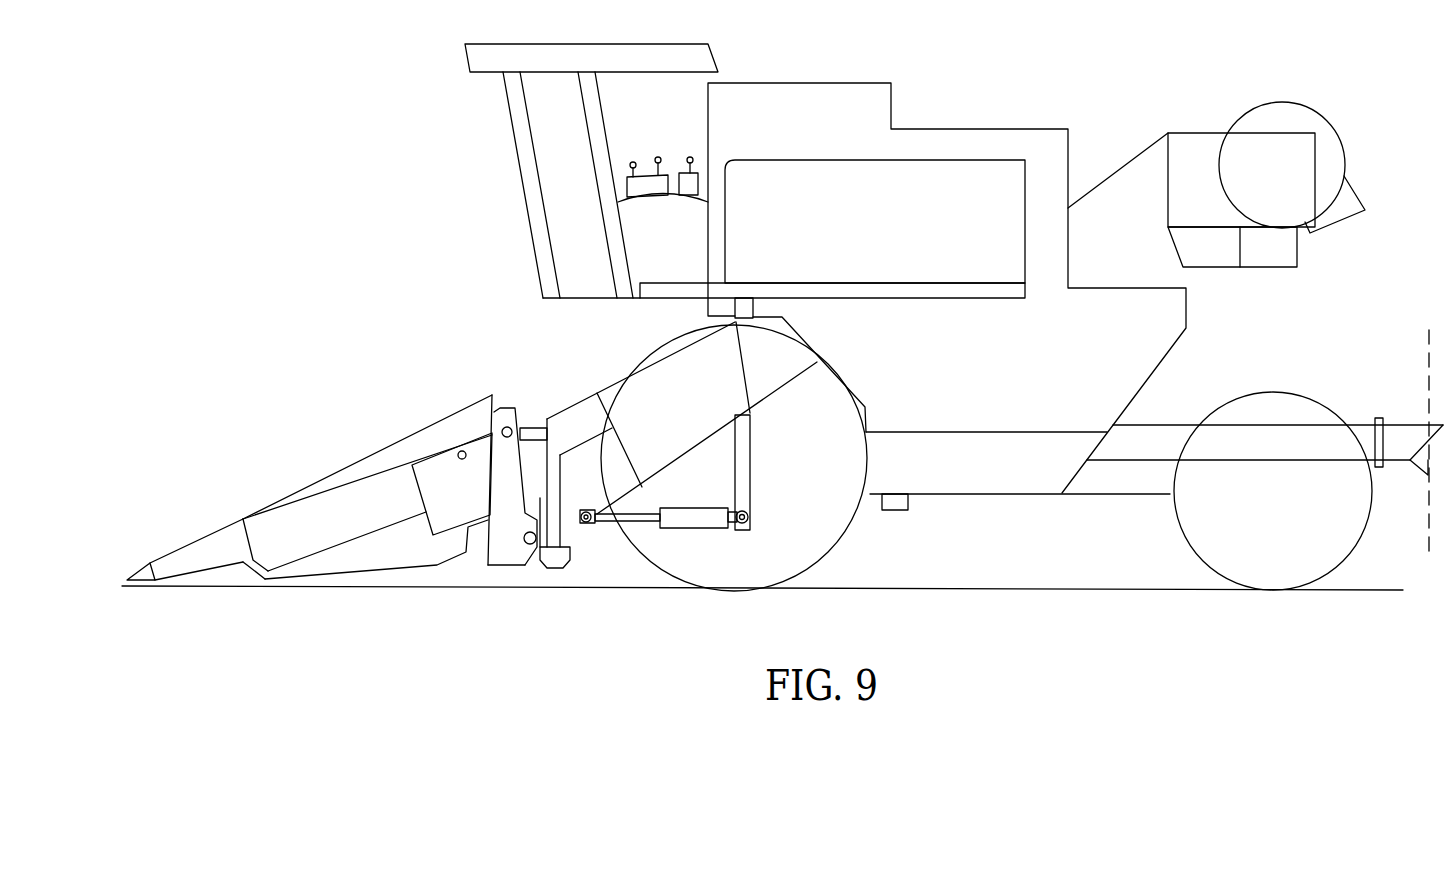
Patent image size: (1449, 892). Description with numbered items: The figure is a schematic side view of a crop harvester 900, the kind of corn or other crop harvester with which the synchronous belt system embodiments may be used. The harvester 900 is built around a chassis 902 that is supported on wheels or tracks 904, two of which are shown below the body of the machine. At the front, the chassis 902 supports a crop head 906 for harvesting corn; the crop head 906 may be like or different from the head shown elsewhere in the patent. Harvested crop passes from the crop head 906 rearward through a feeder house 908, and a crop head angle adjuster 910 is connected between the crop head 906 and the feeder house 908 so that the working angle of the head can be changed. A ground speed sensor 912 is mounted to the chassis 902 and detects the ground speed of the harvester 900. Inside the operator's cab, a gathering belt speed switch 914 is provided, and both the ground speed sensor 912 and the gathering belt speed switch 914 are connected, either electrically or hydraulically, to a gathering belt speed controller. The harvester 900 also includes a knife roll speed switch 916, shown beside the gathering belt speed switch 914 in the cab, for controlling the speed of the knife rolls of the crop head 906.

The harvester 900 is at (371, 223).
The chassis 902 is at (1025, 129).
The wheels or tracks 904 is at (843, 534).
The crop head 906 is at (310, 486).
The feeder house 908 is at (613, 385).
The crop head angle adjuster 910 is at (546, 419).
The ground speed sensor 912 is at (905, 510).
The gathering belt speed switch 914 is at (658, 157).
The knife roll speed switch 916 is at (690, 157).